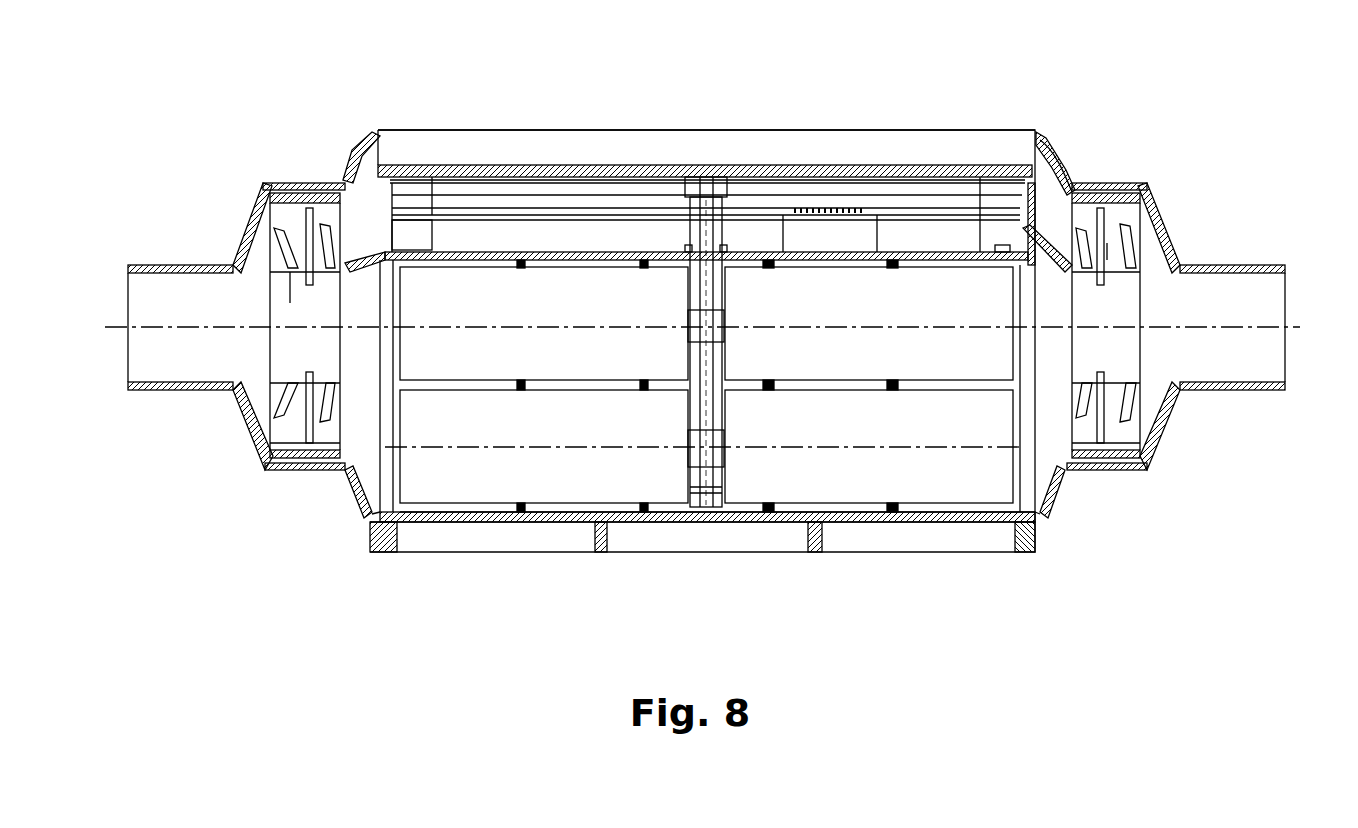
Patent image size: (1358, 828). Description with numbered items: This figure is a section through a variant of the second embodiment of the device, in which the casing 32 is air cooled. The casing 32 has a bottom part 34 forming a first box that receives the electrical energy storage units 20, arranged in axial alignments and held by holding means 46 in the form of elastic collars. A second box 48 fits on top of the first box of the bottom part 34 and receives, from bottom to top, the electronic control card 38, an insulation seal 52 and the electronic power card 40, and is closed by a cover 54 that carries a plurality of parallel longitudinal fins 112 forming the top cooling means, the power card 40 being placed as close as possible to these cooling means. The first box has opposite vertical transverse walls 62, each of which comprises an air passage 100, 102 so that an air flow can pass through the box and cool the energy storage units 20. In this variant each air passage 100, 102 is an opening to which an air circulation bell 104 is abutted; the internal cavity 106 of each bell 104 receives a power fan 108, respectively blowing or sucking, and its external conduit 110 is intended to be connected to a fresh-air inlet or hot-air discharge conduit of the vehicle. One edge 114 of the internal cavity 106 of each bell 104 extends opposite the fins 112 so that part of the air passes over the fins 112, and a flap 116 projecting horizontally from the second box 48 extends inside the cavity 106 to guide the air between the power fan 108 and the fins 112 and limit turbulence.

The electrical energy storage unit 20 is at (717, 344).
The casing 32 is at (352, 510).
The bottom part 34 is at (537, 534).
The electronic control card 38 is at (588, 212).
The electronic power card 40 is at (480, 176).
The holding means 46 is at (645, 516).
The second box 48 is at (1043, 196).
The insulation seal 52 is at (1057, 147).
The cover 54 is at (661, 130).
The vertical transverse wall 62 is at (362, 521).
The air passage 100 is at (357, 472).
The air passage 102 is at (1036, 486).
The air circulation bell 104 is at (233, 264).
The internal cavity 106 is at (355, 205).
The power fan 108 is at (290, 348).
The external conduit 110 is at (170, 391).
The fins 112 is at (930, 140).
The edge 114 is at (370, 134).
The flap 116 is at (290, 303).